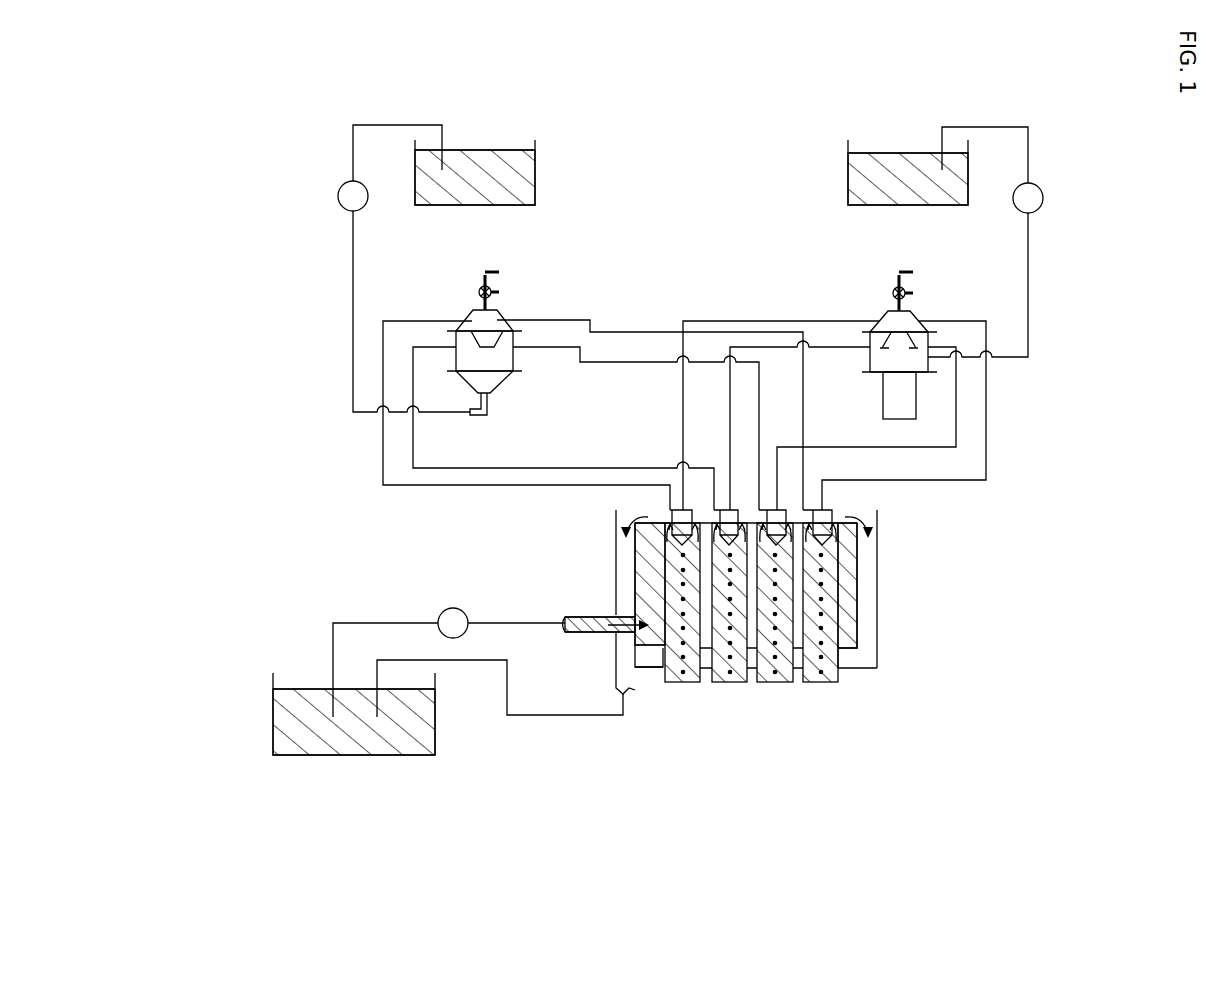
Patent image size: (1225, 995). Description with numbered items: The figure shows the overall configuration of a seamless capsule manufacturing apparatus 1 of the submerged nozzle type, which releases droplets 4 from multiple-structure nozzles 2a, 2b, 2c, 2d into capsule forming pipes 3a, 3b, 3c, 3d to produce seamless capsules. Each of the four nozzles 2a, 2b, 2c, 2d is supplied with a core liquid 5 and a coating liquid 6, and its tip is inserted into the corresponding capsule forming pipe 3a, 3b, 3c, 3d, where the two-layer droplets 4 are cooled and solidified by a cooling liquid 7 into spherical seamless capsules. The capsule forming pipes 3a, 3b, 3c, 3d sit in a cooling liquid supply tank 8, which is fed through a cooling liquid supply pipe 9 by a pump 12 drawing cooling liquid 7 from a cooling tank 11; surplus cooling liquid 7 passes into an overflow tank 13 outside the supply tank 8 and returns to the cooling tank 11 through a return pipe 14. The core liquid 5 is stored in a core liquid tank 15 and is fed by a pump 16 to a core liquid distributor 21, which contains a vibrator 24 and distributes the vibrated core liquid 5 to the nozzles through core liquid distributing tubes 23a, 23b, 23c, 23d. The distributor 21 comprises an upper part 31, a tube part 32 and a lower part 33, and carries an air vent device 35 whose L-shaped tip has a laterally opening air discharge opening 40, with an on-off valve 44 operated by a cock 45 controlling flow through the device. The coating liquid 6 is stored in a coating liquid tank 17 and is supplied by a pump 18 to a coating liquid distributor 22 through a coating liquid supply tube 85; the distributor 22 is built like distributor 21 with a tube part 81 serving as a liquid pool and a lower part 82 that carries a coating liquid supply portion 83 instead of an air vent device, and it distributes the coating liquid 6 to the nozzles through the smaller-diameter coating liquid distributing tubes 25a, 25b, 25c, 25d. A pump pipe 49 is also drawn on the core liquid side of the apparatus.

The seamless capsule manufacturing apparatus 1 is at (680, 152).
The nozzle 2a is at (680, 510).
The nozzle 2b is at (727, 510).
The nozzle 2c is at (778, 514).
The nozzle 2d is at (833, 516).
The capsule forming pipe 3a is at (683, 683).
The capsule forming pipe 3b is at (730, 683).
The capsule forming pipe 3c is at (776, 683).
The capsule forming pipe 3d is at (822, 683).
The droplets 4 is at (662, 669).
The core liquid 5 is at (882, 190).
The coating liquid 6 is at (512, 186).
The cooling liquid 7 is at (398, 735).
The cooling liquid supply tank 8 is at (857, 558).
The cooling liquid supply pipe 9 is at (515, 618).
The cooling tank 11 is at (273, 720).
The pump 12 is at (445, 611).
The overflow tank 13 is at (877, 638).
The return pipe 14 is at (553, 718).
The core liquid tank 15 is at (848, 177).
The pump 16 is at (1045, 198).
The coating liquid tank 17 is at (535, 172).
The pump 18 is at (338, 196).
The core liquid distributor 21 is at (916, 372).
The coating liquid distributor 22 is at (503, 371).
The core liquid distributing tube 23a is at (700, 321).
The core liquid distributing tube 23b is at (828, 346).
The core liquid distributing tube 23c is at (943, 450).
The core liquid distributing tube 23d is at (986, 456).
The vibrator 24 is at (898, 420).
The coating liquid distributing tube 25a is at (466, 488).
The coating liquid distributing tube 25b is at (526, 471).
The coating liquid distributing tube 25c is at (610, 361).
The coating liquid distributing tube 25d is at (645, 331).
The upper part 31 is at (468, 311).
The tube part 32 is at (866, 362).
The lower part 33 is at (876, 382).
The air vent device 35 is at (486, 273).
The air discharge opening 40 is at (499, 271).
The on-off valve 44 is at (491, 298).
The cock 45 is at (499, 292).
The pump pipe 49 is at (1028, 302).
The tube part 81 is at (513, 358).
The lower part 82 is at (461, 380).
The coating liquid supply portion 83 is at (490, 407).
The coating liquid supply tube 85 is at (345, 347).